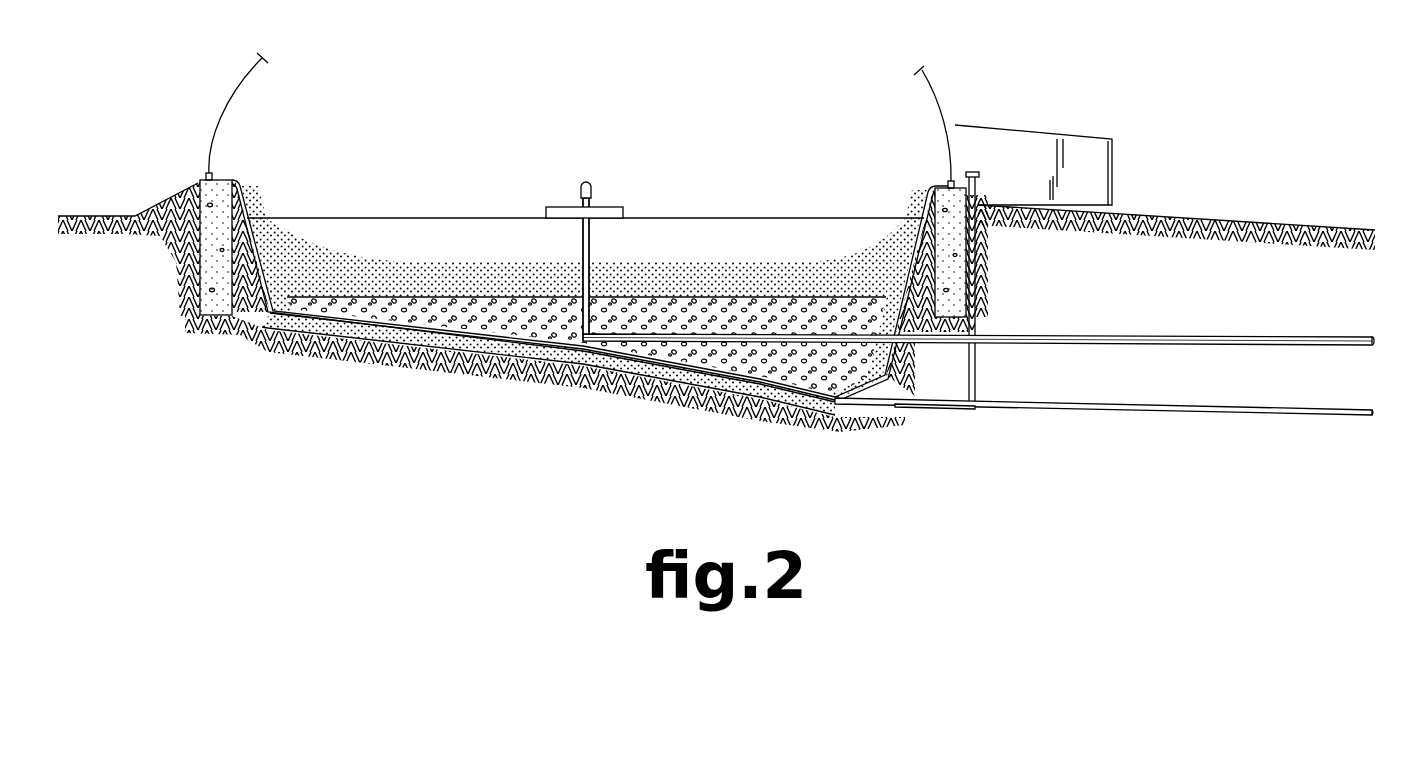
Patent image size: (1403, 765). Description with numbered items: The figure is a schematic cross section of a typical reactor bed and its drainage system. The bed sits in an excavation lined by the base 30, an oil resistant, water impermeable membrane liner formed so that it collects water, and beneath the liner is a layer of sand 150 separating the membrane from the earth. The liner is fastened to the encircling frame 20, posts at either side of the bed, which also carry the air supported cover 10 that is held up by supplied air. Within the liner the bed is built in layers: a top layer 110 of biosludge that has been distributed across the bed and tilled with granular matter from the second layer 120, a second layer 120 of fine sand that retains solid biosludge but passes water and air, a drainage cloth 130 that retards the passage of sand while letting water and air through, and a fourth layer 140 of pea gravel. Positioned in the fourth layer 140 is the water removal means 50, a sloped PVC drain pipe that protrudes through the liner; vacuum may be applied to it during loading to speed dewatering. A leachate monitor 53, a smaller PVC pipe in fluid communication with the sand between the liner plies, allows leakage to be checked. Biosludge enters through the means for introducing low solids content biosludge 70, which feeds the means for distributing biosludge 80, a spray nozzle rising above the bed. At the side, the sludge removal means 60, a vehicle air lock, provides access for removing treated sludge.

The air supported cover 10 is at (940, 80).
The encircling frame 20 is at (178, 287).
The base 30 is at (690, 405).
The water removal means 50 is at (1140, 400).
The leachate monitor 53 is at (913, 413).
The sludge removal means 60 is at (1035, 130).
The means for introducing low solids content biosludge 70 is at (1122, 333).
The means for distributing biosludge 80 is at (583, 181).
The top layer 110 is at (381, 216).
The second layer 120 is at (503, 240).
The drainage cloth 130 is at (688, 297).
The fourth layer 140 is at (780, 305).
The layer of sand 150 is at (377, 360).